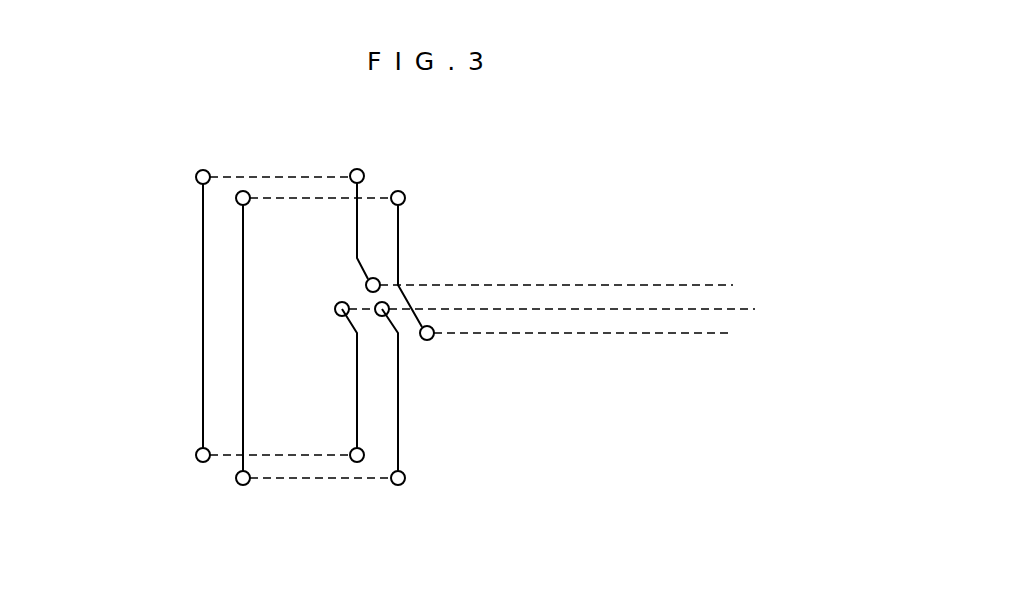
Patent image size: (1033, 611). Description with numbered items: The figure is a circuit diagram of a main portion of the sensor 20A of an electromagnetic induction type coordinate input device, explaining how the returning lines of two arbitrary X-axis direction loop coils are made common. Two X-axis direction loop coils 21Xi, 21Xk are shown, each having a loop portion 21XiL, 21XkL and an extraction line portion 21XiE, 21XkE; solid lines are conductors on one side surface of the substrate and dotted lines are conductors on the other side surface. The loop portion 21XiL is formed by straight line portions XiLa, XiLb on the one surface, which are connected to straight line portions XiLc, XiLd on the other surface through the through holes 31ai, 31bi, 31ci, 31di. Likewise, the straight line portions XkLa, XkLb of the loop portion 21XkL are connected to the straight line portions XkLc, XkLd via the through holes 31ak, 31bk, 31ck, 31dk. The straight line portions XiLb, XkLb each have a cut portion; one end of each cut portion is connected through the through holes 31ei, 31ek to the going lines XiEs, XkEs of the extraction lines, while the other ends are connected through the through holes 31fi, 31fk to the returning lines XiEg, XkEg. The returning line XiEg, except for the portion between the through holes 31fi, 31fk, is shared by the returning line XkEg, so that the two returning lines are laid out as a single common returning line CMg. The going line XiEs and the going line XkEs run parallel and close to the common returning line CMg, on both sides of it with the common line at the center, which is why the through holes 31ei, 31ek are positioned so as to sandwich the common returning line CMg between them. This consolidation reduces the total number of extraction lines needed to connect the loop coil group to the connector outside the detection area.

The sensor 20A is at (250, 92).
The X-axis direction loop coil 21Xi is at (200, 207).
The X-axis direction loop coil 21Xk is at (241, 420).
The loop portion 21XiL is at (203, 292).
The loop portion 21XkL is at (243, 347).
The extraction line portion 21XiE is at (652, 307).
The extraction line portion 21XkE is at (563, 333).
The straight line portion XiLa is at (203, 235).
The straight line portion XkLa is at (243, 327).
The straight line portion XiLb is at (357, 365).
The straight line portion XkLb is at (398, 456).
The straight line portion XiLc is at (273, 177).
The straight line portion XkLc is at (313, 198).
The straight line portion XiLd is at (275, 455).
The straight line portion XkLd is at (318, 478).
The returning line XiEg is at (363, 312).
The returning line XkEg is at (444, 309).
The going line XiEs is at (697, 282).
The going line XkEs is at (677, 333).
The common returning line CMg is at (725, 307).
The through hole 31ai is at (358, 169).
The through hole 31ak is at (400, 191).
The through hole 31bi is at (197, 172).
The through hole 31bk is at (241, 191).
The through hole 31ci is at (196, 455).
The through hole 31ck is at (237, 483).
The through hole 31di is at (357, 462).
The through hole 31dk is at (403, 484).
The through hole 31ei is at (366, 282).
The through hole 31ek is at (433, 338).
The through hole 31fi is at (335, 309).
The through hole 31fk is at (388, 314).